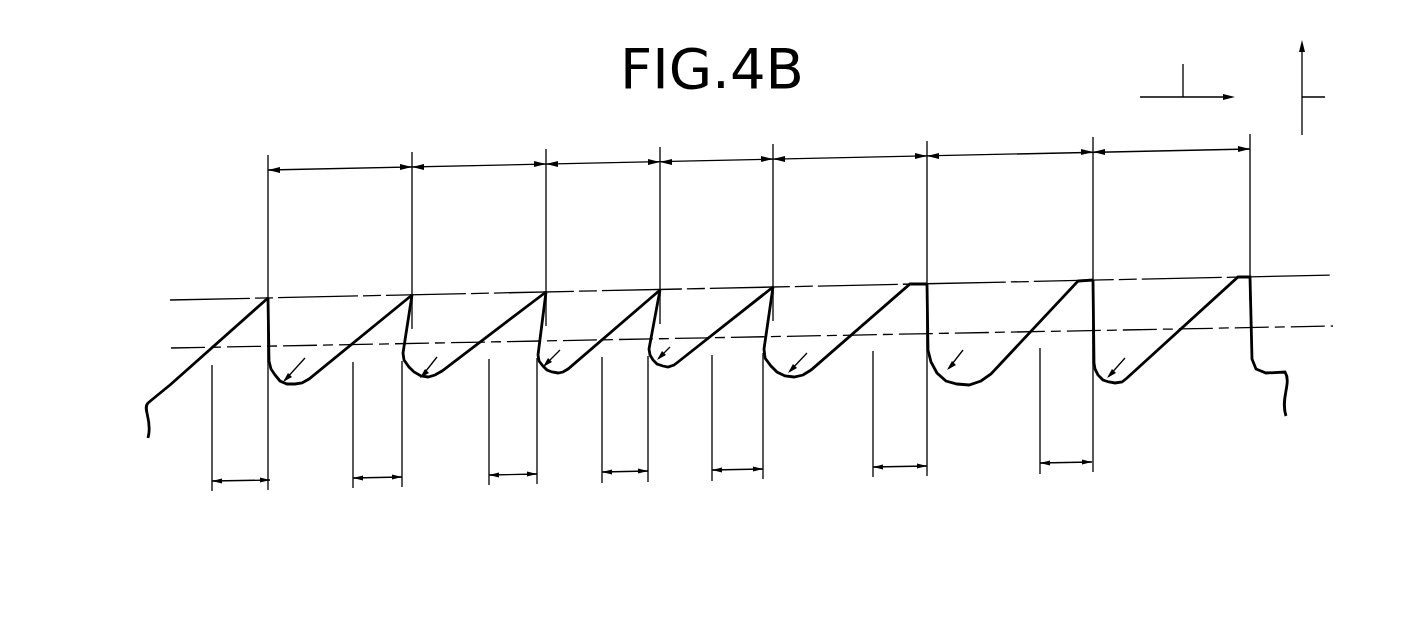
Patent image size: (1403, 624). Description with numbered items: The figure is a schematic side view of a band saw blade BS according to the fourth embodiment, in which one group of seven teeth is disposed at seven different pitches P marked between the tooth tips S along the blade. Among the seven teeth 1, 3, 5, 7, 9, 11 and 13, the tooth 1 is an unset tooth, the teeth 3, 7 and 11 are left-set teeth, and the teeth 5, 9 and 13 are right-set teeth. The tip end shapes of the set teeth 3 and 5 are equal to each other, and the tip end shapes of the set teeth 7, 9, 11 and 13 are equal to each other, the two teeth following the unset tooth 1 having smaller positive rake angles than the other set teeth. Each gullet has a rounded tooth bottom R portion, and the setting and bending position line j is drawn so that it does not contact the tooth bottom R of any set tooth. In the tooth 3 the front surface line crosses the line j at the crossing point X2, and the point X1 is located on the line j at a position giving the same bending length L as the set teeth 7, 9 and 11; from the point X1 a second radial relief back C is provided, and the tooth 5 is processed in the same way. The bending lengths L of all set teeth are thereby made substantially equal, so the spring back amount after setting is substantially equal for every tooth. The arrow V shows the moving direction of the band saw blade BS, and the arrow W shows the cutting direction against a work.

The unset tooth 1 is at (250, 316).
The left-set tooth 3 is at (1061, 303).
The right-set tooth 5 is at (890, 304).
The left-set tooth 7 is at (755, 299).
The right-set tooth 9 is at (638, 307).
The left-set tooth 11 is at (530, 310).
The right-set tooth 13 is at (397, 312).
The band saw blade BS is at (565, 116).
The tooth tip S is at (271, 295).
The tooth bottom R portion R is at (710, 345).
The second radial relief back C is at (1079, 285).
The bending length L is at (652, 419).
The pitch P is at (759, 302).
The point X1 is at (1040, 322).
The crossing point X2 is at (1098, 381).
The setting and bending position j—j line j is at (1367, 393).
The moving direction arrow V is at (1187, 68).
The cutting direction arrow W is at (1332, 87).